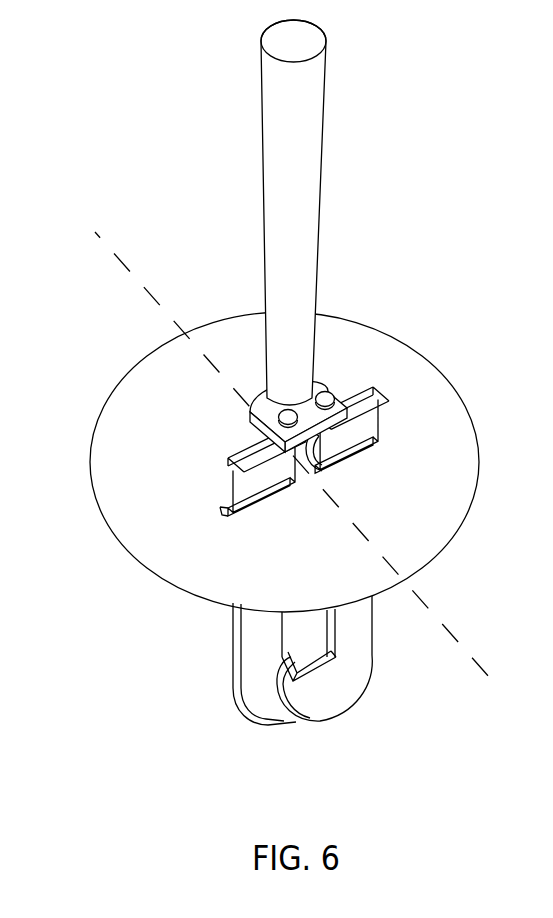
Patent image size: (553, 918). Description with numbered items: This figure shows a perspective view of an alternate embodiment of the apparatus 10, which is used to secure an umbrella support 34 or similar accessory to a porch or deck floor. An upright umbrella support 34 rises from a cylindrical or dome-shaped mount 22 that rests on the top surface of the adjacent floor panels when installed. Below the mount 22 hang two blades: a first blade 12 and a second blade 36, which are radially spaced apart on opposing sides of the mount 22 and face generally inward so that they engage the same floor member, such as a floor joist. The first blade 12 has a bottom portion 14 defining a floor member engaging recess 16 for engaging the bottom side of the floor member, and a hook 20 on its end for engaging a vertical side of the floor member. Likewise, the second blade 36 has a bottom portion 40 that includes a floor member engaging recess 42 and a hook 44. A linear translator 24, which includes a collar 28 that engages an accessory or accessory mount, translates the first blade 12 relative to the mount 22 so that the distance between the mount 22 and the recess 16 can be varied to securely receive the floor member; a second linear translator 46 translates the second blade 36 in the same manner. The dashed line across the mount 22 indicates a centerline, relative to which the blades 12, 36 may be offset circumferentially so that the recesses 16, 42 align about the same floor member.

The apparatus 10 is at (127, 92).
The first blade 12 is at (384, 633).
The bottom portion 14 is at (328, 727).
The floor member engaging recess 16 is at (322, 672).
The hook 20 is at (298, 645).
The mount 22 is at (114, 390).
The linear translator 24 is at (328, 383).
The collar 28 is at (389, 402).
The umbrella support 34 is at (262, 137).
The second blade 36 is at (229, 645).
The bottom portion 40 is at (280, 728).
The floor member engaging recess 42 is at (267, 678).
The hook 44 is at (321, 634).
The linear translator 46 is at (264, 416).